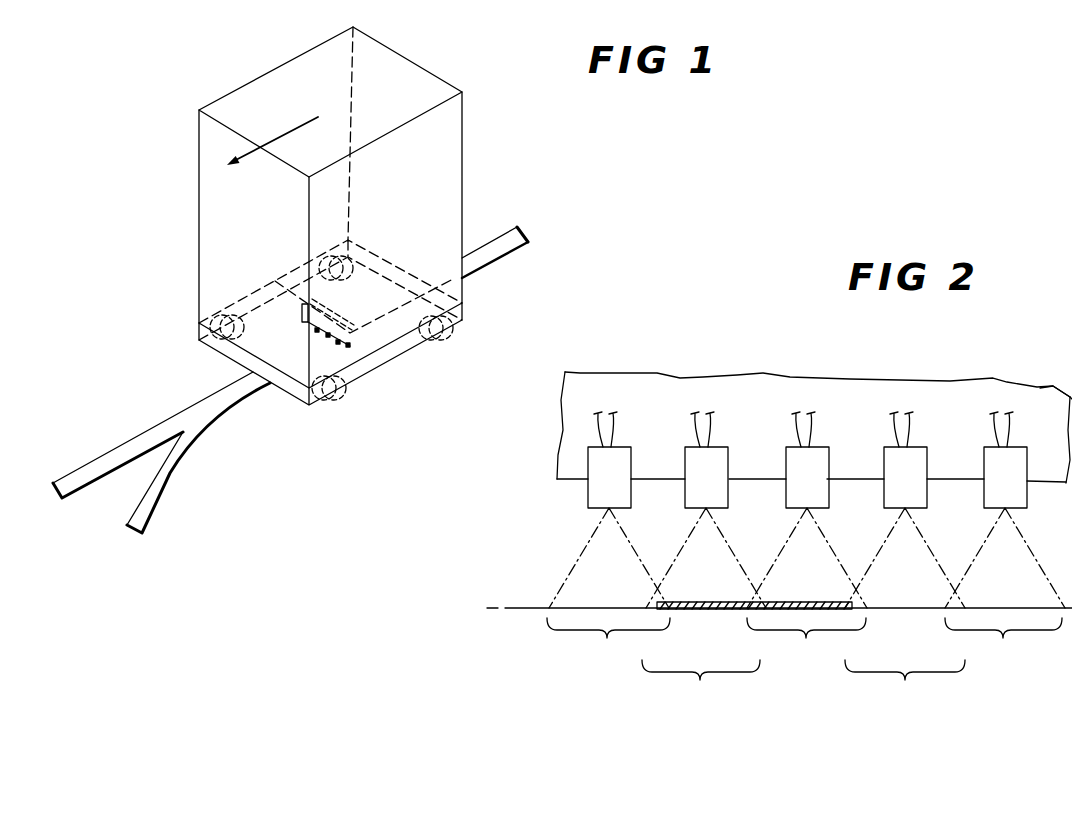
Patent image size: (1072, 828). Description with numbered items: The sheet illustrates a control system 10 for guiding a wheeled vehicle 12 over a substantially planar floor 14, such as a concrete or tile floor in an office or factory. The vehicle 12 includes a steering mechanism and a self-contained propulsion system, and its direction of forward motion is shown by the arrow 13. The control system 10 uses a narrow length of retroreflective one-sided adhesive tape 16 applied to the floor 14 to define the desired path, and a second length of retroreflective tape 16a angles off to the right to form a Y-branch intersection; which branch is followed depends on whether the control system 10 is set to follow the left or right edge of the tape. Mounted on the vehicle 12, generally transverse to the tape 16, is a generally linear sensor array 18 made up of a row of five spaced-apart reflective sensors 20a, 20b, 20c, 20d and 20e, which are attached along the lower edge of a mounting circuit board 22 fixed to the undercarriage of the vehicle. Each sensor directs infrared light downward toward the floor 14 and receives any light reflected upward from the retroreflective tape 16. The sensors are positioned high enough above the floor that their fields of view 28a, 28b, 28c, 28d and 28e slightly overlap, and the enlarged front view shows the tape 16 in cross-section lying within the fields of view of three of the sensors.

In FIG. 1, the control system 10 is at (345, 365).
In FIG. 2, the control system 10 is at (779, 469).
In FIG. 1, the wheeled vehicle 12 is at (463, 156).
In FIG. 2, the wheeled vehicle 12 is at (778, 382).
In FIG. 1, the arrow 13 is at (287, 128).
In FIG. 1, the floor 14 is at (154, 389).
In FIG. 2, the floor 14 is at (523, 607).
In FIG. 1, the retroreflective tape 16 is at (231, 396).
In FIG. 2, the retroreflective tape 16 is at (806, 600).
In FIG. 1, the retroreflective tape 16a is at (170, 474).
In FIG. 1, the sensor array 18 is at (294, 321).
In FIG. 2, the sensor array 18 is at (776, 503).
In FIG. 2, the reflective sensor 20a is at (588, 460).
In FIG. 2, the reflective sensor 20b is at (690, 463).
In FIG. 2, the reflective sensor 20c is at (787, 468).
In FIG. 2, the reflective sensor 20d is at (884, 468).
In FIG. 2, the reflective sensor 20e is at (984, 468).
In FIG. 1, the mounting circuit board 22 is at (354, 336).
In FIG. 2, the mounting circuit board 22 is at (1036, 389).
In FIG. 2, the field of view 28a is at (608, 643).
In FIG. 2, the field of view 28b is at (701, 687).
In FIG. 2, the field of view 28c is at (806, 643).
In FIG. 2, the field of view 28d is at (905, 687).
In FIG. 2, the field of view 28e is at (1003, 643).